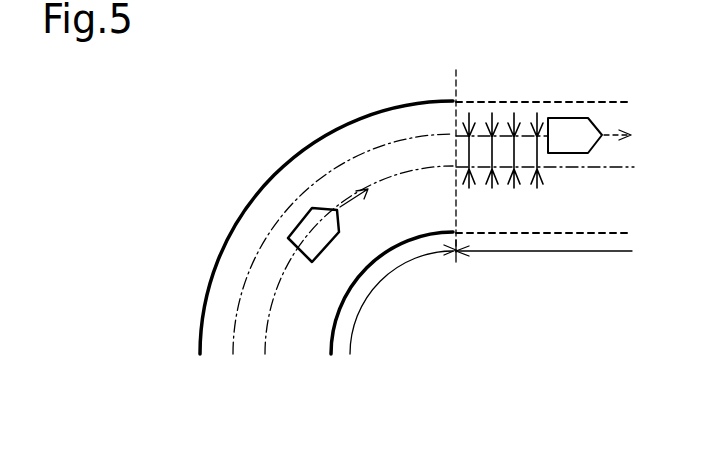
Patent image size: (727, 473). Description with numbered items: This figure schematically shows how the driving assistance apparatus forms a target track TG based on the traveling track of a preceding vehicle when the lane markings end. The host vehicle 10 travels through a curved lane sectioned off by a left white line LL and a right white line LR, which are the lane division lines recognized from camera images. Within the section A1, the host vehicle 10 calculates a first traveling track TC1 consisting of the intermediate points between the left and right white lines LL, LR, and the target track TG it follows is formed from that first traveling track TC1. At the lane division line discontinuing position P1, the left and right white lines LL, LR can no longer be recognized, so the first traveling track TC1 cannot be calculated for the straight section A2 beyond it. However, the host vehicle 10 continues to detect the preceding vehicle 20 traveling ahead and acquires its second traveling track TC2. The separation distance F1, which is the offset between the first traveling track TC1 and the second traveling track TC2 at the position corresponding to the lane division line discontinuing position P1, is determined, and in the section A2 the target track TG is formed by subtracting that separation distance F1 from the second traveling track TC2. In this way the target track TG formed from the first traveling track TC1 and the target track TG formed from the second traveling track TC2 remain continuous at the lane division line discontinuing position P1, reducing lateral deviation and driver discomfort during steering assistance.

The host vehicle 10 is at (330, 246).
The preceding vehicle 20 is at (577, 118).
The first traveling track TC1 is at (370, 188).
The second traveling track TC2 is at (348, 161).
The separation distance F1 is at (537, 142).
The target track TG is at (616, 168).
The section A1 is at (403, 299).
The section A2 is at (544, 265).
The lane division line discontinuing position P1 is at (453, 266).
The left white line LL is at (299, 257).
The right white line LR is at (361, 323).